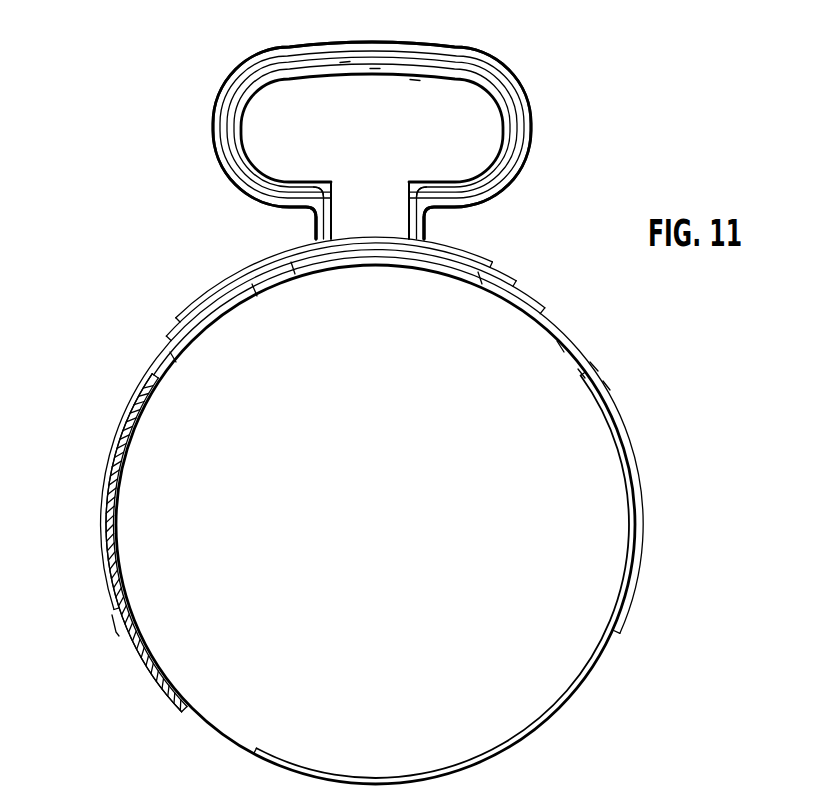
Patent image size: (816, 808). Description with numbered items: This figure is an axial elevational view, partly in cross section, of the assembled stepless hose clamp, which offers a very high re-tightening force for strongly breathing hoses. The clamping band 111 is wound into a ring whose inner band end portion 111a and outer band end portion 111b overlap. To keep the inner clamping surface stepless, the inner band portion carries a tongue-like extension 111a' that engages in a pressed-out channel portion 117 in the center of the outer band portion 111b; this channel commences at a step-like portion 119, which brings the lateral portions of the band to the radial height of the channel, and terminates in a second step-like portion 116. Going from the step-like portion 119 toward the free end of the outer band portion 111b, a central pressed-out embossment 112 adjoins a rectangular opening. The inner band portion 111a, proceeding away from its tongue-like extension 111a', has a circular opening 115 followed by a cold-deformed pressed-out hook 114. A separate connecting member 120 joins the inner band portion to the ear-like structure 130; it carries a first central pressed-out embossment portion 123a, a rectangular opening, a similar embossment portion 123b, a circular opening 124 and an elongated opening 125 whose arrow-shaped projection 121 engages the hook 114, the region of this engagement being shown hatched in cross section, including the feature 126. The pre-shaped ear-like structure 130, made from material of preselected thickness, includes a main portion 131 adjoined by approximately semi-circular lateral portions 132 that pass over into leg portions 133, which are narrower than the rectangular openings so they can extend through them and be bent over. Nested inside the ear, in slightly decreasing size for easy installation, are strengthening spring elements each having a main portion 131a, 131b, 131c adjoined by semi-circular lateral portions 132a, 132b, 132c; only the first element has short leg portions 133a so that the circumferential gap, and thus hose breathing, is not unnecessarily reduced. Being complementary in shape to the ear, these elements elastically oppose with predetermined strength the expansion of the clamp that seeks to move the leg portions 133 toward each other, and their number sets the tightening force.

The clamping band 111 is at (223, 733).
The inner band end portion 111a is at (407, 335).
The tongue-like extension 111a' is at (558, 395).
The outer band end portion 111b is at (293, 266).
The central pressed-out embossment 112 is at (532, 300).
The pressed-out hook 114 is at (116, 630).
The circular opening 115 is at (115, 487).
The second step-like portion 116 is at (616, 633).
The pressed-out channel portion 117 is at (636, 585).
The step-like portion 119 is at (607, 387).
The connecting member 120 is at (133, 378).
The arrow-shaped projection 121 is at (173, 357).
The first central pressed-out embossment portion 123a is at (490, 263).
The central pressed-out embossment portion 123b is at (205, 292).
The circular opening 124 is at (128, 403).
The elongated opening 125 is at (103, 540).
The clasp kink 126 is at (120, 637).
The ear-like structure 130 is at (431, 43).
The main portion 131 is at (343, 43).
The main portion 131a is at (345, 63).
The main portion 131b is at (375, 68).
The main portion 131c is at (415, 80).
The lateral portions 132 is at (214, 127).
The lateral portions 132a is at (528, 126).
The lateral portions 132b is at (519, 118).
The lateral portions 132c is at (523, 100).
The leg portions 133 is at (316, 218).
The short leg portions 133a is at (400, 210).